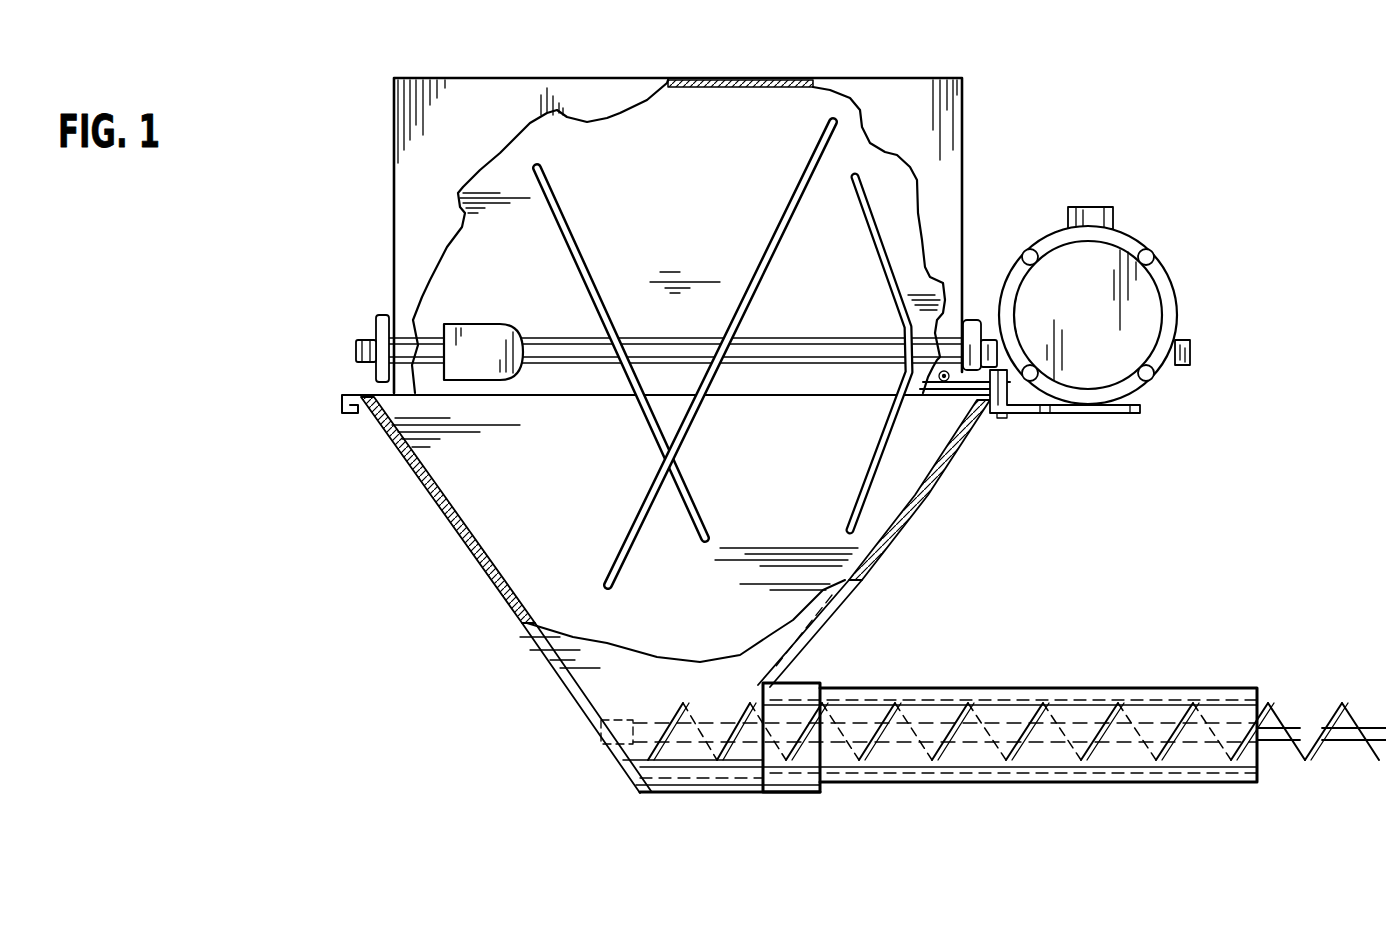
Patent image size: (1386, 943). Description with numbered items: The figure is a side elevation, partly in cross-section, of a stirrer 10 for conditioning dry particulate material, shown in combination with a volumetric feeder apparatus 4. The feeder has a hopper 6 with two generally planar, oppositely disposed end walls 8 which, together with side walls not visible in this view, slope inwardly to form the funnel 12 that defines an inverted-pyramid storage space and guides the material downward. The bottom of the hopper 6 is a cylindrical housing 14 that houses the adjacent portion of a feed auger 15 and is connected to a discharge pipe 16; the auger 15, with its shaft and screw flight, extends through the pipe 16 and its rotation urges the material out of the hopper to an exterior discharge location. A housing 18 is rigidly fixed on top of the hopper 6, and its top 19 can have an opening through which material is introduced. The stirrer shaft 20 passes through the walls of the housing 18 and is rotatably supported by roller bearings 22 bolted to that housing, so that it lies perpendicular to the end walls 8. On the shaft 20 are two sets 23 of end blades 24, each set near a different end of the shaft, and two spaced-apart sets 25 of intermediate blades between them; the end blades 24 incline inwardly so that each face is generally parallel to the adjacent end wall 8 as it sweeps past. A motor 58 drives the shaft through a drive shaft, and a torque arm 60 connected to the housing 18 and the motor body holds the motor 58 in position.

The volumetric feeder apparatus 4 is at (1080, 641).
The hopper 6 is at (646, 595).
The end walls 8 is at (382, 440).
The stirrer 10 is at (626, 480).
The funnel 12 is at (828, 617).
The cylindrical housing 14 is at (700, 795).
The feed auger 15 is at (1289, 727).
The discharge pipe 16 is at (882, 786).
The housing 18 is at (963, 160).
The top of housing 19 is at (769, 78).
The shaft 20 is at (820, 337).
The roller bearings 22 is at (368, 325).
The sets of end blades 23 is at (489, 322).
The end blades 24 is at (874, 236).
The sets of intermediate blades 25 is at (583, 257).
The motor 58 is at (1180, 285).
The torque arm 60 is at (1012, 414).